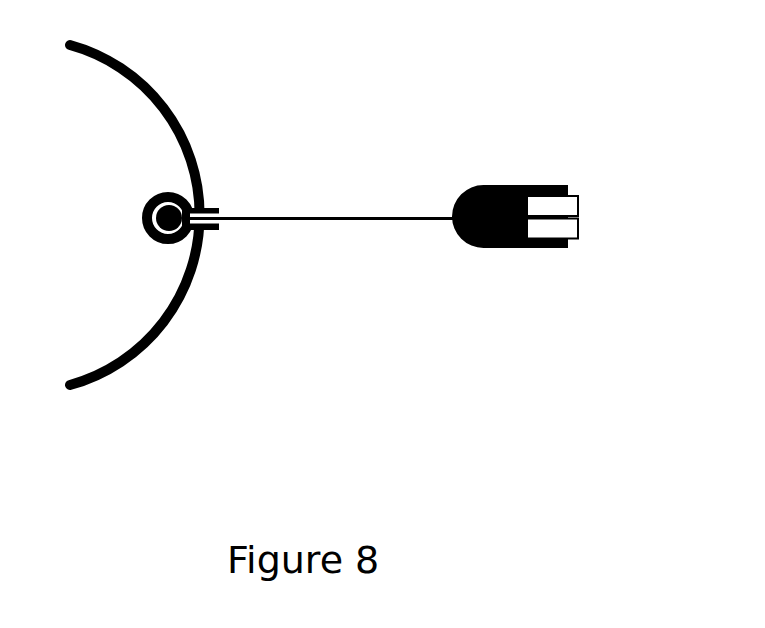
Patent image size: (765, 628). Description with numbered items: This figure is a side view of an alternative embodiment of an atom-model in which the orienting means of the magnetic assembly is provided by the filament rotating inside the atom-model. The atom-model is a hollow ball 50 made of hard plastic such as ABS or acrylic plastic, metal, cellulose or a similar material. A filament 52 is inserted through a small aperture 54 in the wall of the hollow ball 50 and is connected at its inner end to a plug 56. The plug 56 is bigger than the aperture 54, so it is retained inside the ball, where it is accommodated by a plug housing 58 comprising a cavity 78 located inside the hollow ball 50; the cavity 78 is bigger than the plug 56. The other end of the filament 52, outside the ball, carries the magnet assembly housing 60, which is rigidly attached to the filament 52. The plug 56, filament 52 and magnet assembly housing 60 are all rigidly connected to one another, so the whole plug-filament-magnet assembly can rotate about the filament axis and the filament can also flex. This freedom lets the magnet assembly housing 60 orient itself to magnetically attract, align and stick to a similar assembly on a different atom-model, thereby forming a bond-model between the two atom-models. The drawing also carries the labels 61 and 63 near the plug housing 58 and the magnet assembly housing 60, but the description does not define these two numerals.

The hollow ball 50 is at (189, 127).
The filament 52 is at (305, 216).
The aperture 54 is at (217, 228).
The plug 56 is at (143, 230).
The plug housing 58 is at (175, 248).
The magnet assembly housing 60 is at (467, 206).
The ring mount 61 is at (131, 193).
The connector body 63 is at (450, 222).
The cavity 78 is at (131, 228).